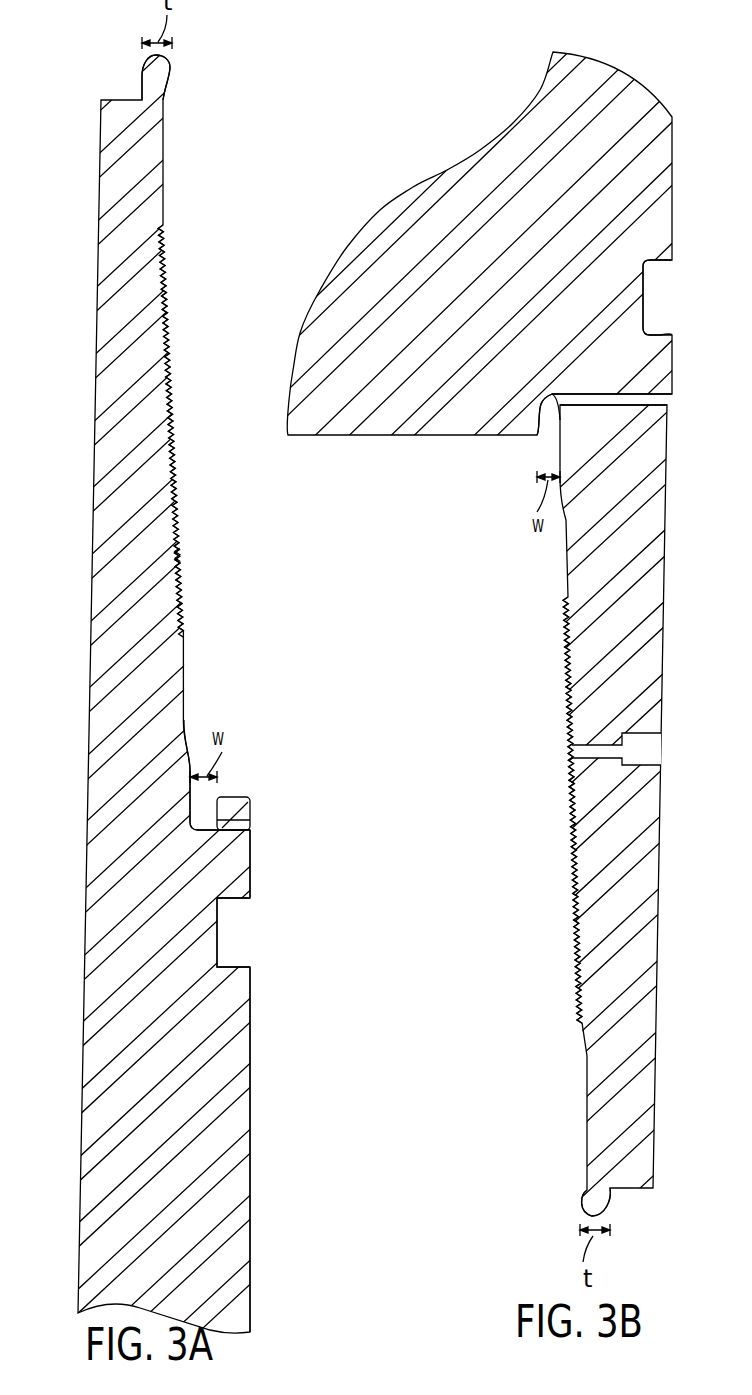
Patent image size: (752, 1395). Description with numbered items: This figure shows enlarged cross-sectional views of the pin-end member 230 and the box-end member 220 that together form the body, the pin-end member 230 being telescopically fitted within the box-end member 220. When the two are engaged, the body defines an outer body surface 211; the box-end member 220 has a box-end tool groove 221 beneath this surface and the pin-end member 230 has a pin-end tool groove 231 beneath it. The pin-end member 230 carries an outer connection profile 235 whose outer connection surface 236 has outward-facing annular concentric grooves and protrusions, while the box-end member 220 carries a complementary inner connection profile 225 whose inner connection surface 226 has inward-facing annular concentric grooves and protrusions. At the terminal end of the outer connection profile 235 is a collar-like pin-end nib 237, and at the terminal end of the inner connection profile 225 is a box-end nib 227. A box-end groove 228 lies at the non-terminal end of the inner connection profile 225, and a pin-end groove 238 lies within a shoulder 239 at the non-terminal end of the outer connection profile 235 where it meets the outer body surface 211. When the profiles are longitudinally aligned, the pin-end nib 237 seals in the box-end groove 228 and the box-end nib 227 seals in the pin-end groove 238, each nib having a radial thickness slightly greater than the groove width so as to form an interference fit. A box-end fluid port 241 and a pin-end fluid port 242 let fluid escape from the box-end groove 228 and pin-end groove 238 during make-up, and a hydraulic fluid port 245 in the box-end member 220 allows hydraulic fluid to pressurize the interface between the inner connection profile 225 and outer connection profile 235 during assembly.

In FIG. 3A, the outer body surface 211 is at (252, 867).
In FIG. 3B, the outer body surface 211 is at (663, 668).
In FIG. 3B, the box-end member 220 is at (643, 105).
In FIG. 3B, the box-end tool groove 221 is at (648, 315).
In FIG. 3B, the inner connection profile 225 is at (571, 905).
In FIG. 3B, the inner connection surface 226 is at (573, 784).
In FIG. 3B, the box-end nib 227 is at (580, 1211).
In FIG. 3B, the box-end groove 228 is at (553, 420).
In FIG. 3A, the pin-end member 230 is at (90, 925).
In FIG. 3A, the pin-end tool groove 231 is at (222, 940).
In FIG. 3A, the outer connection profile 235 is at (185, 492).
In FIG. 3A, the outer connection surface 236 is at (186, 559).
In FIG. 3A, the pin-end nib 237 is at (172, 77).
In FIG. 3A, the pin-end groove 238 is at (207, 822).
In FIG. 3A, the shoulder 239 is at (232, 797).
In FIG. 3B, the box-end fluid port 241 is at (640, 393).
In FIG. 3A, the pin-end fluid port 242 is at (248, 828).
In FIG. 3B, the hydraulic fluid port 245 is at (638, 752).